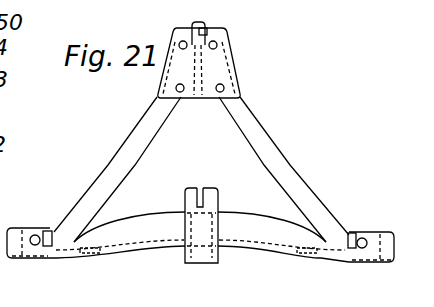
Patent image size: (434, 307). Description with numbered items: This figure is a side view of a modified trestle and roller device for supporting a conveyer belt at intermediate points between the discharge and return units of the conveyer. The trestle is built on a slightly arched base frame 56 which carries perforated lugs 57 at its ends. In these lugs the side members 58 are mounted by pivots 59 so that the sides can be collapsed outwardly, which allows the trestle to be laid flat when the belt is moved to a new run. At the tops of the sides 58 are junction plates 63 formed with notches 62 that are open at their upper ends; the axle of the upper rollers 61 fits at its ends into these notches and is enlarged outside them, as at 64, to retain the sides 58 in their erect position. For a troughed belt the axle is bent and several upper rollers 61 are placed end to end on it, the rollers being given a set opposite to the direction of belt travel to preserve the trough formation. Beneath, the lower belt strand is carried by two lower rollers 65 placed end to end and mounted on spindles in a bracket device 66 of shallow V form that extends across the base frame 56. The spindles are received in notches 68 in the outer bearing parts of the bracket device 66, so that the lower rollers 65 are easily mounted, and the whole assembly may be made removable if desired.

The base frame 56 is at (163, 213).
The perforated lugs 57 is at (50, 245).
The side members 58 is at (247, 128).
The pivots 59 is at (41, 246).
The upper rollers 61 is at (205, 24).
The notches 62 is at (208, 33).
The junction plates 63 is at (238, 80).
The enlarged portion of axle 64 is at (200, 46).
The lower rollers 65 is at (198, 188).
The bracket device 66 is at (208, 263).
The notches 68 is at (203, 198).